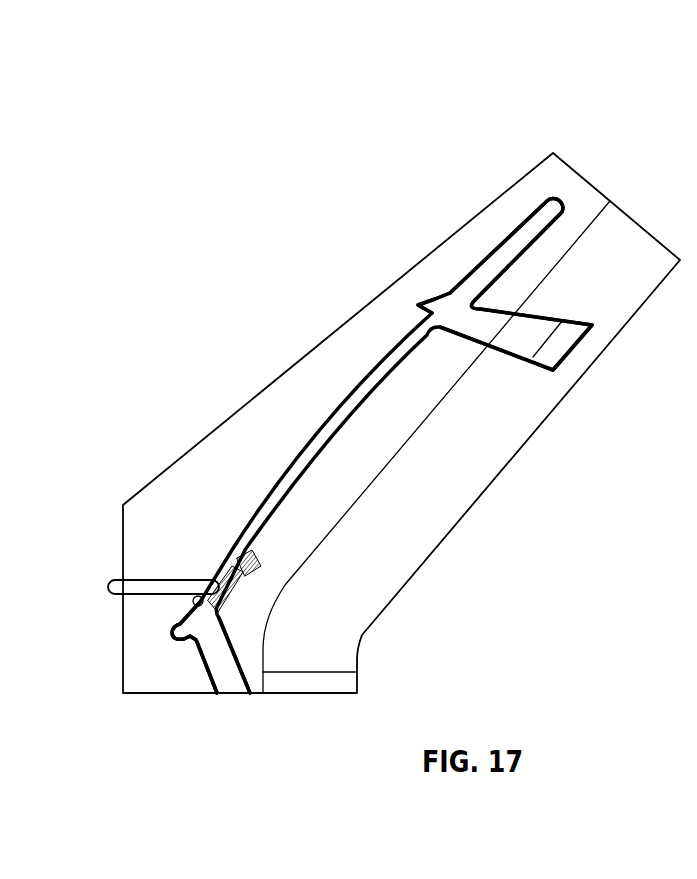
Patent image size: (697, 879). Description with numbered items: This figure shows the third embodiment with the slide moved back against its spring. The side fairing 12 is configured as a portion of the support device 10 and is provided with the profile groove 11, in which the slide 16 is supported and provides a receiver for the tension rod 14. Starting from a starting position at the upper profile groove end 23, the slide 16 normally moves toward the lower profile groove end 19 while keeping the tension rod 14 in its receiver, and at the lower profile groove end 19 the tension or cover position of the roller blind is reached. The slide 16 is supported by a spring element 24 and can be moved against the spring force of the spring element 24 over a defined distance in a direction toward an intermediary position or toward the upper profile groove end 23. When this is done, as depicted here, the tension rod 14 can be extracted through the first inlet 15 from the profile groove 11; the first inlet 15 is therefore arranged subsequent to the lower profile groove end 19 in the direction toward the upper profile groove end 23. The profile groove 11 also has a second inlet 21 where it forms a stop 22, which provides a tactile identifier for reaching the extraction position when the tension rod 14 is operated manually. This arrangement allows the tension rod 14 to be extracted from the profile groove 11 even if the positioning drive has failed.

The support device 10 is at (365, 180).
The profile groove 11 is at (366, 405).
The side fairing 12 is at (299, 356).
The tension rod 14 is at (150, 588).
The first inlet 15 is at (228, 688).
The slide 16 is at (249, 599).
The lower profile groove end 19 is at (170, 645).
The second inlet 21 is at (564, 354).
The stop 22 is at (432, 310).
The upper profile groove end 23 is at (564, 192).
The spring element 24 is at (261, 571).